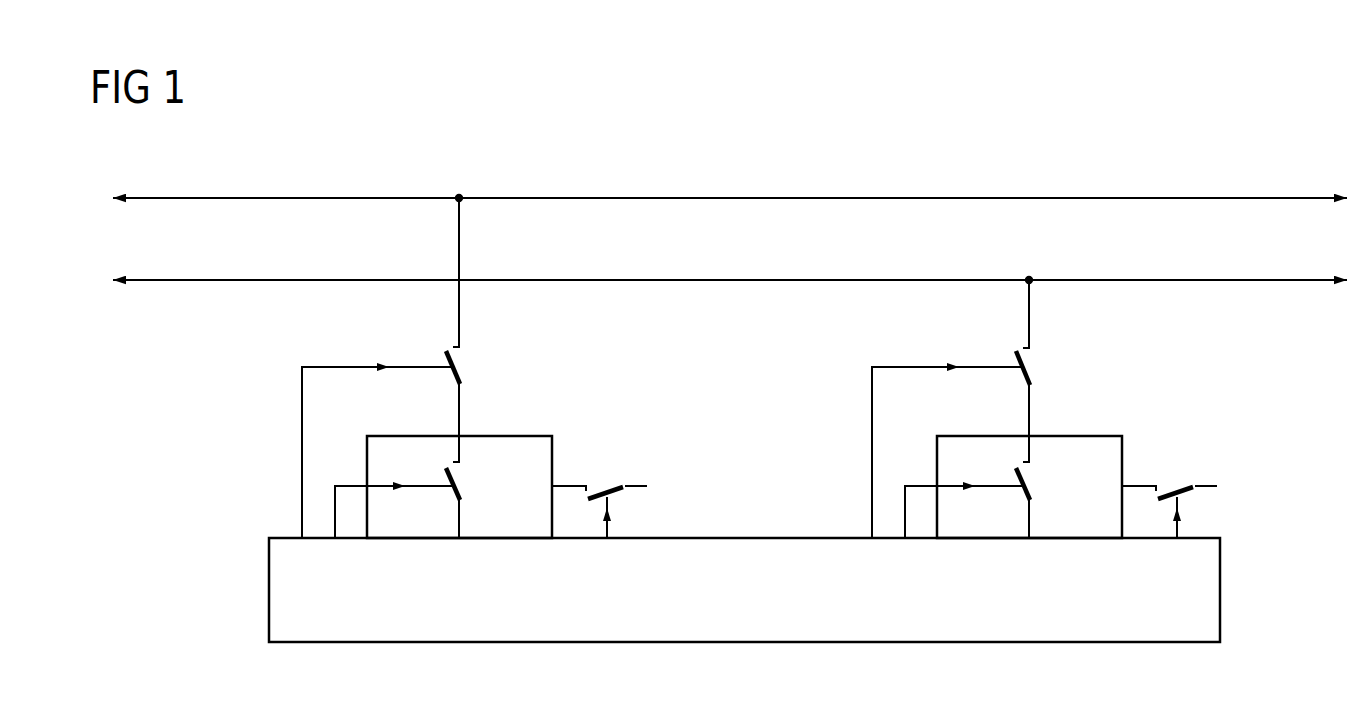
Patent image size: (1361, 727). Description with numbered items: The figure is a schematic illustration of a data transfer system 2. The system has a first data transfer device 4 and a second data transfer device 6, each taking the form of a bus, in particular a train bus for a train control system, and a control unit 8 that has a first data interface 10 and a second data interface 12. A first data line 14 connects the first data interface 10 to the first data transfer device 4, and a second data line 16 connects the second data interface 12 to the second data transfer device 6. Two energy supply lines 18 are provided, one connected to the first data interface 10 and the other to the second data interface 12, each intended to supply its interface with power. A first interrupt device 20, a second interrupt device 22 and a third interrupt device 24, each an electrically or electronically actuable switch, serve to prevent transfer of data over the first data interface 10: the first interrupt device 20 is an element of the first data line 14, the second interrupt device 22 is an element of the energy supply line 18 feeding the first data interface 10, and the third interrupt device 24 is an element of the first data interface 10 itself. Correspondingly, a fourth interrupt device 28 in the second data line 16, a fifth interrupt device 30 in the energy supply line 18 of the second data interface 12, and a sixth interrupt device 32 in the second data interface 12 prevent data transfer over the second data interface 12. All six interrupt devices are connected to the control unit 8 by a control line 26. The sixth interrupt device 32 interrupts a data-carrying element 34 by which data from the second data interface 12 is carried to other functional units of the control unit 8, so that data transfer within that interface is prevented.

The data transfer system 2 is at (883, 153).
The first data transfer device 4 is at (584, 198).
The second data transfer device 6 is at (675, 280).
The control unit 8 is at (612, 645).
The first data interface 10 is at (513, 436).
The second data interface 12 is at (1090, 436).
The first data line 14 is at (459, 245).
The second data line 16 is at (1029, 313).
The energy supply line 18 is at (572, 486).
The first interrupt device 20 is at (466, 361).
The second interrupt device 22 is at (606, 478).
The third interrupt device 24 is at (466, 482).
The control line 26 is at (1225, 515).
The fourth interrupt device 28 is at (1036, 361).
The fifth interrupt device 30 is at (1176, 478).
The sixth interrupt device 32 is at (1036, 482).
The data-carrying element 34 is at (458, 527).